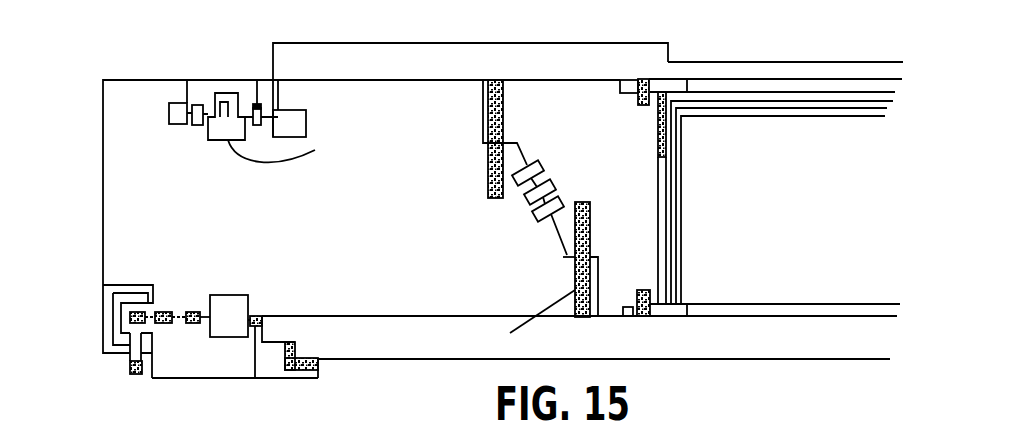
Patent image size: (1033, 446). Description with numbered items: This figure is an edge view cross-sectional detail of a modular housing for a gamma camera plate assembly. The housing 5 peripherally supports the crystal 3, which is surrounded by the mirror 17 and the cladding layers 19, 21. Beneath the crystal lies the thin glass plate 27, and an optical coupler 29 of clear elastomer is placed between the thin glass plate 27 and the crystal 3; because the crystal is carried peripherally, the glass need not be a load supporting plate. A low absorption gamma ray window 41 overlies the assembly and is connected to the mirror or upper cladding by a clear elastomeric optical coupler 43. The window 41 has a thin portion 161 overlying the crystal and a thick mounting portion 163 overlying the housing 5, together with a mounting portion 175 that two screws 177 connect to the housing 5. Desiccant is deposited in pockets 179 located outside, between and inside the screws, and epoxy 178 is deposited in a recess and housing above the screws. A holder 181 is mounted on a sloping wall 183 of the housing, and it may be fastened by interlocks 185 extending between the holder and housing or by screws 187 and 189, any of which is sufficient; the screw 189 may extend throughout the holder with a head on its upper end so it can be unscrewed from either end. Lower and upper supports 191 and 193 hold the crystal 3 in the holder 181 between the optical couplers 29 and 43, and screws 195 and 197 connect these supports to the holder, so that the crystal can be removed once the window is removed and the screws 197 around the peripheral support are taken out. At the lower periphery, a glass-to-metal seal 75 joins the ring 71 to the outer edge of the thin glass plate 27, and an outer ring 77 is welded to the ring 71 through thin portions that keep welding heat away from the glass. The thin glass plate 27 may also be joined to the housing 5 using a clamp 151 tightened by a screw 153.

The crystal 3 is at (877, 306).
The housing 5 is at (103, 261).
The mirror 17 is at (672, 262).
The cladding layer 19 is at (673, 213).
The cladding layer 21 is at (672, 149).
The thin glass plate 27 is at (549, 367).
The optical coupler 29 is at (827, 314).
The gamma ray window 41 is at (553, 43).
The optical coupler 43 is at (825, 80).
The ring 71 is at (264, 380).
The glass-to-metal seal 75 is at (318, 365).
The outer ring 77 is at (238, 380).
The clamp 151 is at (115, 326).
The screw 153 is at (130, 369).
The thin portion 161 is at (771, 62).
The thick mounting portion 163 is at (433, 43).
The mounting portion 175 is at (282, 100).
The screws 177 is at (257, 104).
The epoxy 178 is at (199, 98).
The pockets 179 is at (178, 118).
The holder 181 is at (566, 265).
The sloping wall 183 is at (566, 244).
The interlocks 185 is at (528, 168).
The screw 187 is at (488, 172).
The screw 189 is at (523, 320).
The lower support 191 is at (628, 310).
The upper support 193 is at (628, 88).
The screw 195 is at (648, 290).
The screws 197 is at (640, 97).